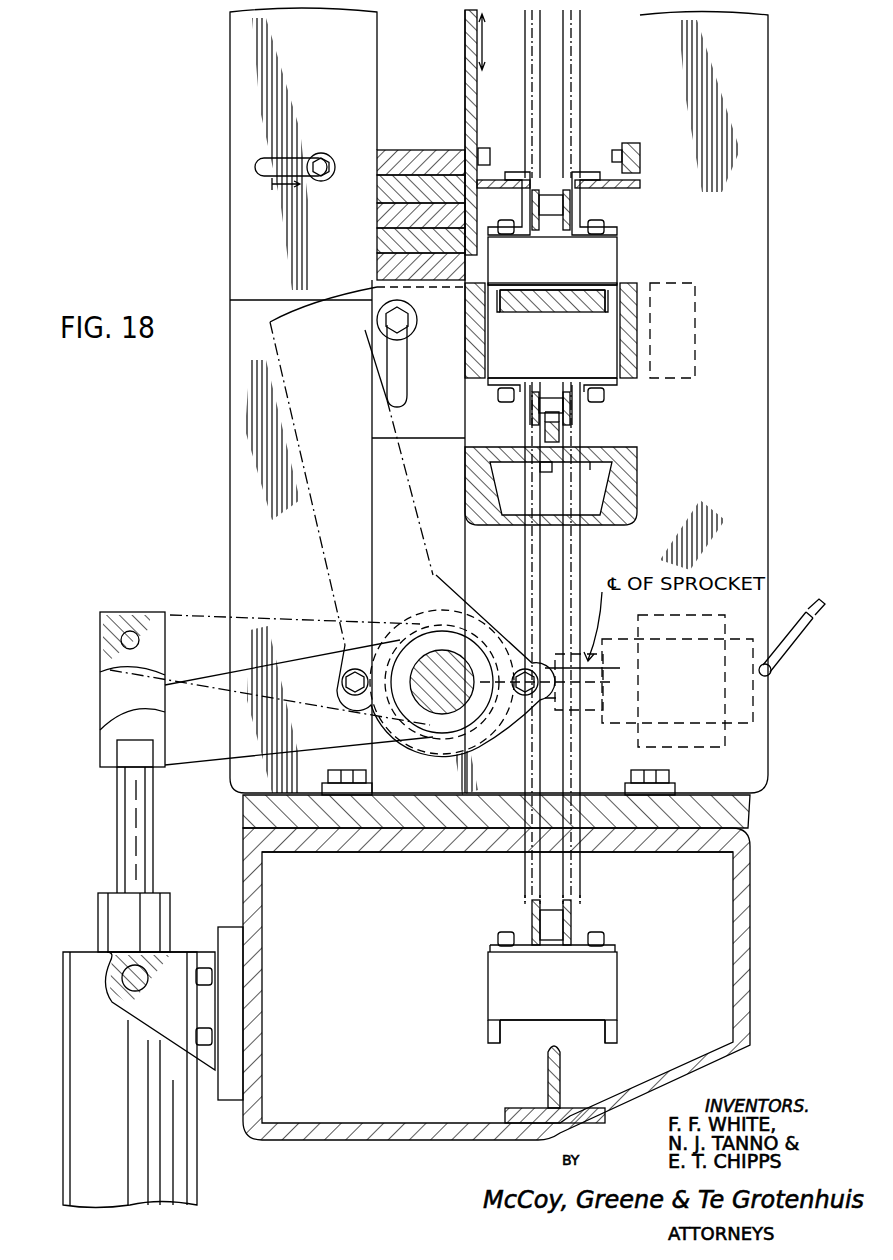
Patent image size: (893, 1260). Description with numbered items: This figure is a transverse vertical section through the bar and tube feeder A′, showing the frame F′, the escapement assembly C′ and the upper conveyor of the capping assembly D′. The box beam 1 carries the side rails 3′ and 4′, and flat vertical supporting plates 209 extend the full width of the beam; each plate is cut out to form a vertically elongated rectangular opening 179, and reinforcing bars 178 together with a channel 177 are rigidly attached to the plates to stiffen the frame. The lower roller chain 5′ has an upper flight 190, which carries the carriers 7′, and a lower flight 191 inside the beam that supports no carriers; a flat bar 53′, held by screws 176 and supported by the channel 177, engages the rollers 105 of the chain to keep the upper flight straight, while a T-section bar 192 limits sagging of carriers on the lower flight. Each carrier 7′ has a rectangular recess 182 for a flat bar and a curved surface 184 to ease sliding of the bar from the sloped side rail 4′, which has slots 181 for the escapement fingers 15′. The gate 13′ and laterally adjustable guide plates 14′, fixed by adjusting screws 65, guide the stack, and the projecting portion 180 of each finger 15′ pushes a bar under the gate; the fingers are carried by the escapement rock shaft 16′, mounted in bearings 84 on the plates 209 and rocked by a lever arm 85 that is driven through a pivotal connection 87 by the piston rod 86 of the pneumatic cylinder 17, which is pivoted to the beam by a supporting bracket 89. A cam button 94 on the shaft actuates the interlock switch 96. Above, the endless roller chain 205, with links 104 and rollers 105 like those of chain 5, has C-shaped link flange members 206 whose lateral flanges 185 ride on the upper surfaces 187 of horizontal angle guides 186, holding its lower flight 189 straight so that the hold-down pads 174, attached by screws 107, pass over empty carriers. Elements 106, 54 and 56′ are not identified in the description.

The guide plates 14′ is at (362, 56).
The supporting plates 209 is at (765, 257).
The gate 13′ is at (465, 62).
The adjusting screws 65 is at (318, 155).
The escapement assembly C′ is at (207, 164).
The bar and tube feeder A′ is at (787, 63).
The capping assembly D′ is at (631, 74).
The endless roller chain 205 is at (582, 42).
The hold-down pads 174 is at (617, 259).
The link flange members 206 is at (525, 207).
The horizontal upper surfaces 187 is at (497, 172).
The horizontal angle guides 186 is at (478, 145).
The horizontal lateral flanges 185 is at (585, 175).
The lower flight 189 is at (622, 207).
The screws 107 is at (606, 225).
The hatched chain link plate 106 is at (530, 380).
The links 104 is at (572, 428).
The rollers 105 is at (543, 212).
The projecting portion 180 is at (478, 283).
The carriers 7′ is at (566, 376).
The slots 181 is at (485, 323).
The curved surface 184 is at (503, 290).
The rectangular recess 182 is at (580, 290).
The side rail 4′ is at (468, 346).
The side rail 3′ is at (637, 325).
The upper flight 190 is at (613, 354).
The flat bar 53′ is at (543, 436).
The rectangular opening 179 is at (632, 390).
The roller chain 5 is at (592, 414).
The reinforcing bars 178 is at (466, 470).
The screws 176 is at (542, 473).
The channel 177 is at (590, 470).
The escapement fingers 15′ is at (382, 415).
The escapement rock shaft 16′ is at (448, 705).
The bearings 84 is at (478, 728).
The button 94 is at (493, 640).
The interlock switch 96 is at (622, 725).
The hatched base plate 56′ is at (755, 807).
The box beam 1 is at (752, 860).
The housing top wall 54 is at (360, 840).
The roller chain 5′ is at (515, 876).
The lower flight 191 is at (474, 1004).
The bar 192 is at (560, 1082).
The frame F′ is at (383, 1170).
The pivotal connection 87 is at (100, 690).
The lever arm 85 is at (208, 614).
The piston rod 86 is at (118, 830).
The pneumatic cylinder 17 is at (190, 1163).
The supporting bracket 89 is at (160, 1020).